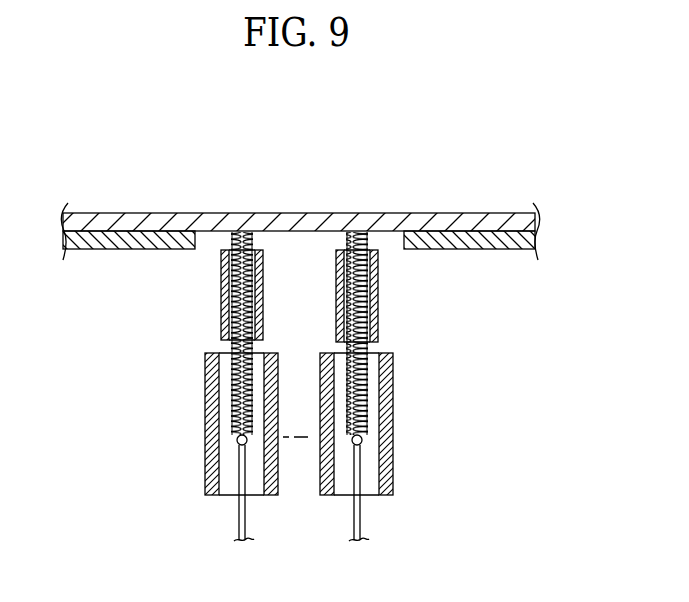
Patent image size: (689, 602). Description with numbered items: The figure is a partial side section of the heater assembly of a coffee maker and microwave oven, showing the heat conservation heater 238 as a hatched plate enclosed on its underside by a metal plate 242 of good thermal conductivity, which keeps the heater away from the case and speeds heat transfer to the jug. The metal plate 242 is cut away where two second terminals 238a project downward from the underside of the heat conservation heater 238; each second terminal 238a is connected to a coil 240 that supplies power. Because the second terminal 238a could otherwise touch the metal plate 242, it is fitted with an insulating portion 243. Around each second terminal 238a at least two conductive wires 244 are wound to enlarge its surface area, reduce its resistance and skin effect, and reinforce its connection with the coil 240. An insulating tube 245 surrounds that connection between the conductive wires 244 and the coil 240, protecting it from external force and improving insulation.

The heat conservation heater 238 is at (276, 222).
The second terminal 238a is at (358, 231).
The metal plate 242 is at (122, 250).
The insulating portion 243 is at (378, 296).
The conductive wires 244 is at (366, 380).
The insulating tube 245 is at (393, 437).
The coil 240 is at (360, 522).